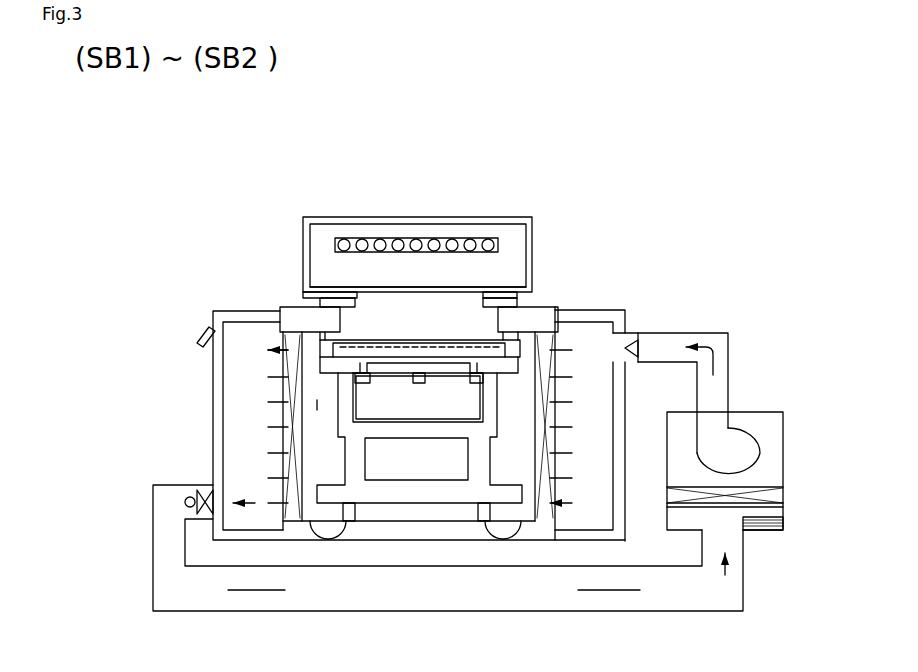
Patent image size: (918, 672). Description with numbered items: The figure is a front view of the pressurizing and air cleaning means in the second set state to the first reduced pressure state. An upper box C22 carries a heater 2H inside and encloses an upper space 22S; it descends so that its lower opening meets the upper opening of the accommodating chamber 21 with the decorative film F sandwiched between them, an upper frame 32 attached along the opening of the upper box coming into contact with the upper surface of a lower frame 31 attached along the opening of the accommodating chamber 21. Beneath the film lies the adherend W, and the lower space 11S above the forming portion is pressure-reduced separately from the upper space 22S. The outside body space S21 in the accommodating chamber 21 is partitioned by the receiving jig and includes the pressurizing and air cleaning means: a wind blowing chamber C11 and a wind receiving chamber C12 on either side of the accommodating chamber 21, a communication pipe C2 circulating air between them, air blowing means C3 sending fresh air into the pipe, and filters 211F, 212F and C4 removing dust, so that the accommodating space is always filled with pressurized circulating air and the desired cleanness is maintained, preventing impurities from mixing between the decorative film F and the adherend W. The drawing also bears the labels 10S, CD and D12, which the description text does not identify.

The upper box C22 is at (303, 235).
The heater 2H is at (335, 245).
The substrate placement surface 10S is at (433, 345).
The upper space 22S is at (440, 277).
The lower space 11S is at (518, 300).
The upper frame 32 is at (525, 298).
The lower frame 31 is at (522, 303).
The filter 211F is at (597, 342).
The wind blowing chamber C11 is at (552, 342).
The check damper CD is at (640, 350).
The accommodating chamber 21 is at (247, 340).
The decorative film F is at (337, 322).
The wind receiving chamber C12 is at (248, 335).
The door D12 is at (203, 332).
The outside body space S21 is at (317, 405).
The adherend W is at (355, 458).
The filter 212F is at (292, 485).
The air blowing means C3 is at (760, 438).
The filter C4 is at (758, 488).
The communication pipe C2 is at (378, 582).